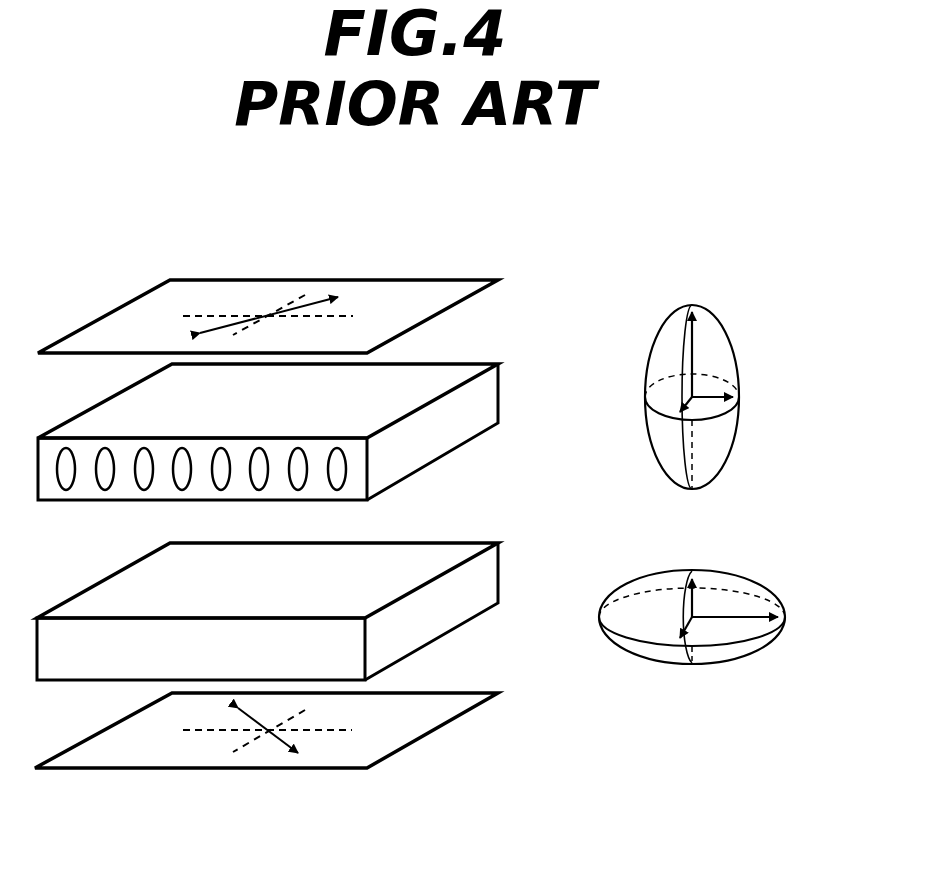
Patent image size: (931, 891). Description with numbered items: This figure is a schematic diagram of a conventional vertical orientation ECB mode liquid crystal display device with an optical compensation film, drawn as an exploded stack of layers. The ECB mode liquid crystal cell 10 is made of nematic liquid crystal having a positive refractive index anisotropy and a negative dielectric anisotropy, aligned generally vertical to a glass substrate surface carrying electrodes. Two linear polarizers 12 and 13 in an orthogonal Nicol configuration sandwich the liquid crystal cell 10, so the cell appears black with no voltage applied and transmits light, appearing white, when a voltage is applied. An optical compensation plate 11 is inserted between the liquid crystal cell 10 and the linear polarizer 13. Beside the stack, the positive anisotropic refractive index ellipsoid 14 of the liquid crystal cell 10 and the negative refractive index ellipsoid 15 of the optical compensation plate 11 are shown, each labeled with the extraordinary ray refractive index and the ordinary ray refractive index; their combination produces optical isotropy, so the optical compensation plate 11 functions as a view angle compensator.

The ECB mode liquid crystal cell 10 is at (457, 362).
The optical compensation plate 11 is at (453, 541).
The linear polarizer 12 is at (410, 276).
The linear polarizer 13 is at (447, 725).
The positive anisotropic refractive index ellipsoid 14 is at (720, 326).
The negative refractive index ellipsoid 15 is at (742, 574).